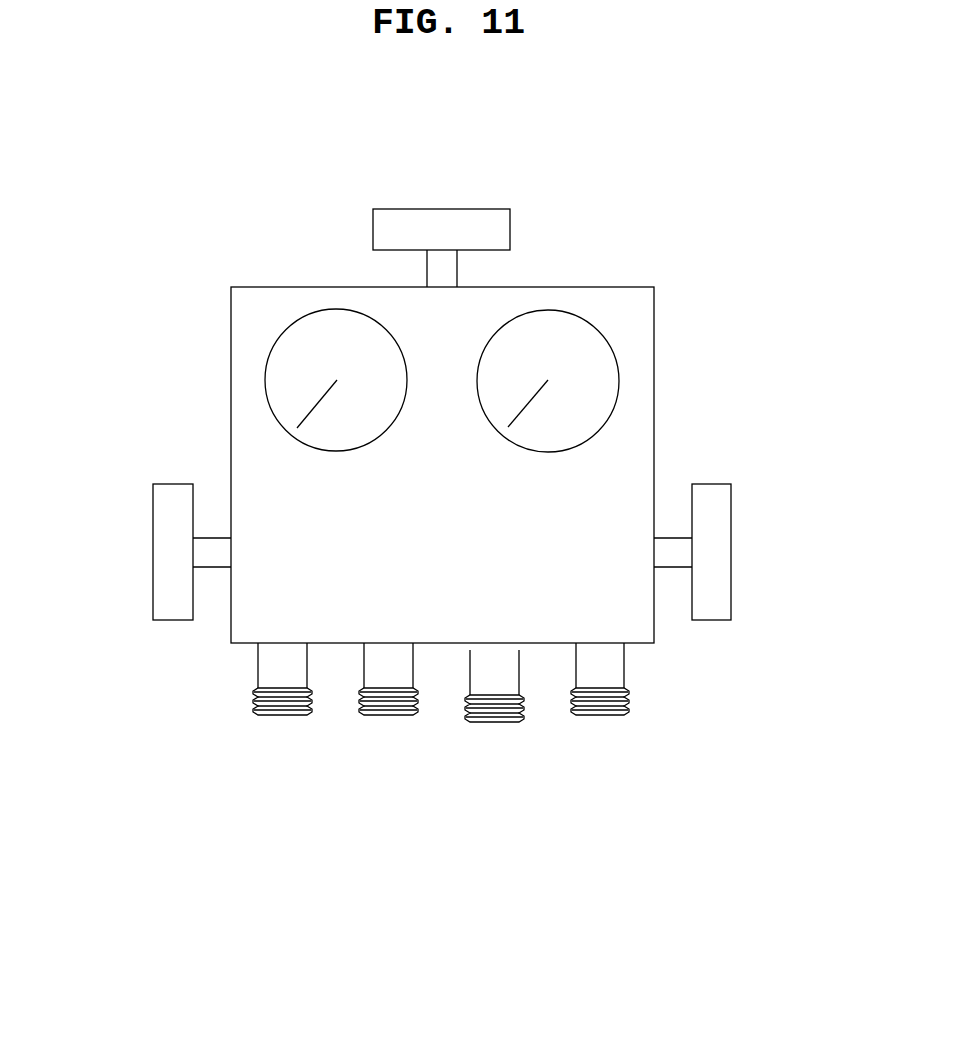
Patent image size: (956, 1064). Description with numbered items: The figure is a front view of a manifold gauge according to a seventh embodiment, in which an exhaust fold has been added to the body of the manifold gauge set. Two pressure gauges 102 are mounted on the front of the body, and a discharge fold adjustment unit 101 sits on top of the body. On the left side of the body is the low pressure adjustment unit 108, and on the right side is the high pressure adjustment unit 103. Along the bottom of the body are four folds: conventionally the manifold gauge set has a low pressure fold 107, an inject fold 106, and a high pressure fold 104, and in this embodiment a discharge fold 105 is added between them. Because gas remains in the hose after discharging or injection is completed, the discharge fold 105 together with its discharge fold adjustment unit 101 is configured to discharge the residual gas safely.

The discharge fold adjustment unit 101 is at (530, 200).
The pressure gauge 102 is at (627, 356).
The high pressure adjustment unit 103 is at (722, 643).
The high pressure fold 104 is at (612, 733).
The discharge fold 105 is at (497, 733).
The inject fold 106 is at (401, 733).
The low pressure fold 107 is at (274, 733).
The low pressure adjustment unit 108 is at (125, 569).